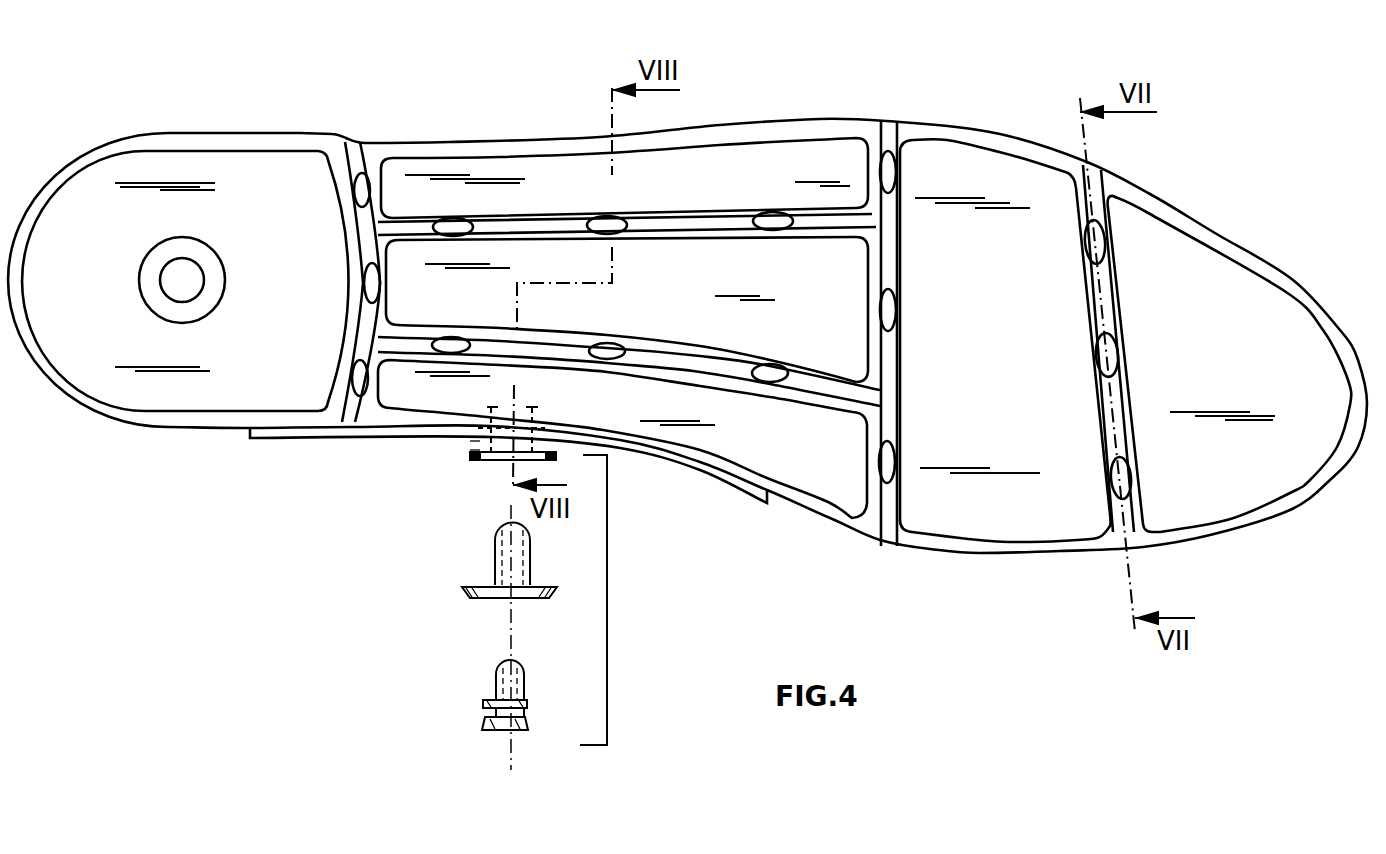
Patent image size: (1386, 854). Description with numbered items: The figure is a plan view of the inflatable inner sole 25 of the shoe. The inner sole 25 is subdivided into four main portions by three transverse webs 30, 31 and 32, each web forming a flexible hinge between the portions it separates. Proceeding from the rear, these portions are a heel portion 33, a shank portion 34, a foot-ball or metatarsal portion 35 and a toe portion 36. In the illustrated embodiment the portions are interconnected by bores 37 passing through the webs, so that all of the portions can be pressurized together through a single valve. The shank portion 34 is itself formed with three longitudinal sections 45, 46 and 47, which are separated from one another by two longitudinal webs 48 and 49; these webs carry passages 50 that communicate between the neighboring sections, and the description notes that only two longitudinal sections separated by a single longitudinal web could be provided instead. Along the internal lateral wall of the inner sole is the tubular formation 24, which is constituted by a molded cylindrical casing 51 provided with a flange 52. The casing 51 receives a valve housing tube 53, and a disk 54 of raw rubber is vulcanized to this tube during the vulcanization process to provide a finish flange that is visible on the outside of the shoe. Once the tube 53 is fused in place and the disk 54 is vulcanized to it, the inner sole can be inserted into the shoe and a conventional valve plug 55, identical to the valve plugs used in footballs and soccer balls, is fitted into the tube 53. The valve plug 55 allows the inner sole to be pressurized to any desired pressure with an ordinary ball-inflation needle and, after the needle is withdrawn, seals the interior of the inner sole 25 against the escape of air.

The tubular formation 24 is at (478, 468).
The inner sole 25 is at (1250, 222).
The transverse web 30 is at (352, 142).
The transverse web 31 is at (888, 124).
The transverse web 32 is at (1093, 168).
The heel portion 33 is at (236, 157).
The shank portion 34 is at (720, 115).
The metatarsal portion 35 is at (948, 148).
The toe portion 36 is at (1286, 291).
The bores 37 is at (370, 287).
The longitudinal section 45 is at (823, 158).
The longitudinal section 46 is at (845, 304).
The longitudinal section 47 is at (836, 458).
The longitudinal web 48 is at (716, 227).
The longitudinal web 49 is at (732, 367).
The passages 50 is at (612, 350).
The molded cylindrical casing 51 is at (482, 442).
The flange 52 is at (477, 448).
The valve housing tube 53 is at (492, 548).
The disk of raw rubber 54 is at (480, 597).
The valve plug 55 is at (490, 696).